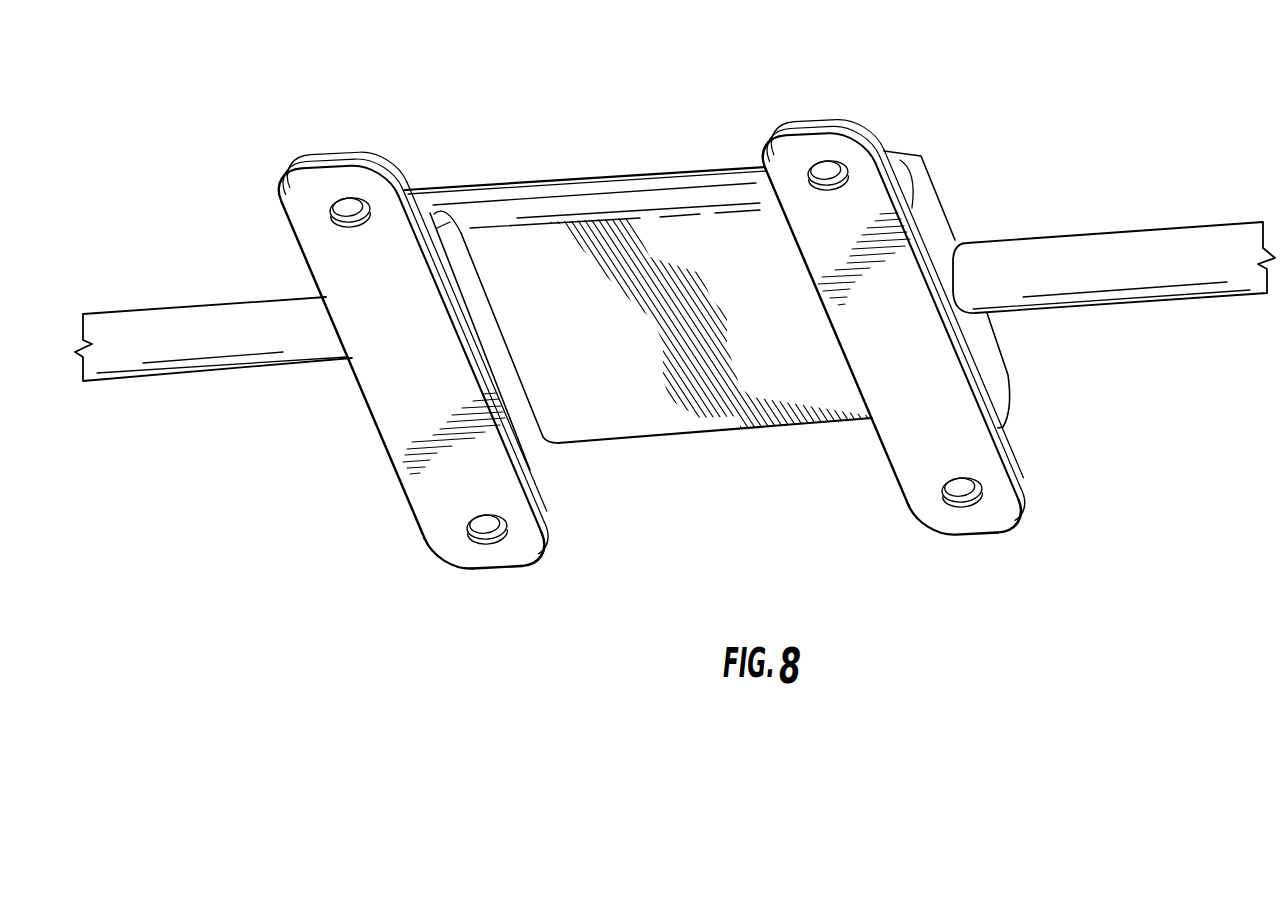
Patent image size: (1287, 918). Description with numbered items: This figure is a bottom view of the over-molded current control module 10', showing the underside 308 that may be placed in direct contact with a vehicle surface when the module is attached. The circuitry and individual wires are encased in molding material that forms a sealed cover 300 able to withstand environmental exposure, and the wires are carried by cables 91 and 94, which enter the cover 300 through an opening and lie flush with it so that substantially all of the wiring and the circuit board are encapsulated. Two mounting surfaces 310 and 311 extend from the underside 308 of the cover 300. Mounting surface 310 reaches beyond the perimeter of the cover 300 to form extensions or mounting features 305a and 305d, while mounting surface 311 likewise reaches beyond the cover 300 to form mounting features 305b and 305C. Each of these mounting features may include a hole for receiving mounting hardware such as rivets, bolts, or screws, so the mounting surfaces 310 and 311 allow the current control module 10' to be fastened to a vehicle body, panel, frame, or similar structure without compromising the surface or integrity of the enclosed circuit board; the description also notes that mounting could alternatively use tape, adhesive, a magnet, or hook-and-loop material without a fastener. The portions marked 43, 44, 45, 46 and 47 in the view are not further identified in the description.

The current control module 10' is at (674, 330).
The cover 300 is at (530, 207).
The underside 308 is at (748, 417).
The mounting surface 310 is at (310, 237).
The mounting surface 311 is at (960, 413).
The mounting feature 305a is at (548, 551).
The mounting feature 305b is at (1028, 513).
The mounting feature 305C is at (809, 128).
The mounting feature 305d is at (364, 151).
The first side 43 is at (345, 431).
The second side 44 is at (413, 580).
The third side 45 is at (557, 596).
The fourth side 46 is at (893, 90).
The fifth side 47 is at (986, 560).
The cable 91 is at (202, 279).
The cable 94 is at (1120, 205).